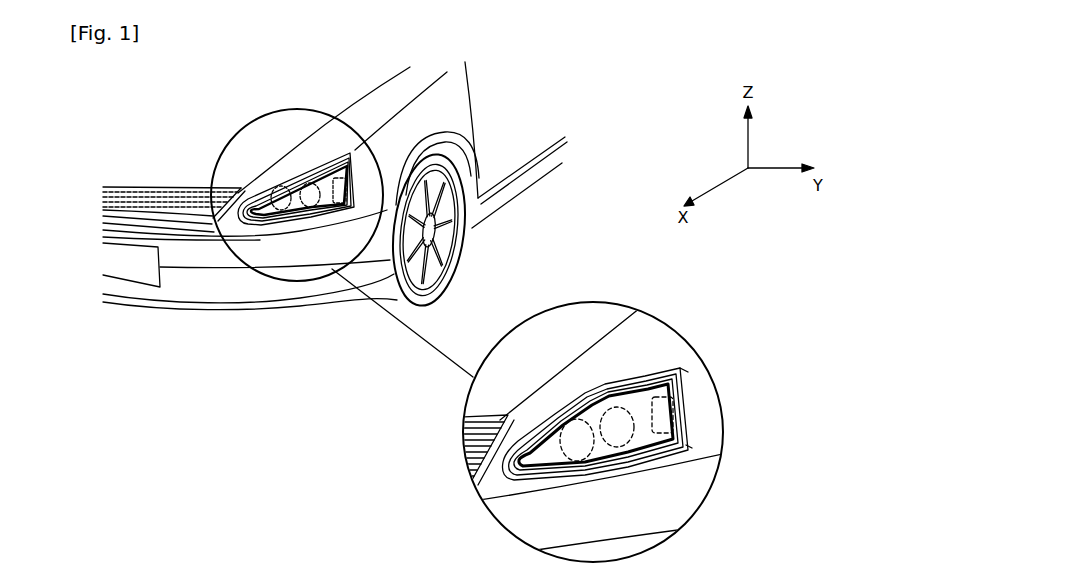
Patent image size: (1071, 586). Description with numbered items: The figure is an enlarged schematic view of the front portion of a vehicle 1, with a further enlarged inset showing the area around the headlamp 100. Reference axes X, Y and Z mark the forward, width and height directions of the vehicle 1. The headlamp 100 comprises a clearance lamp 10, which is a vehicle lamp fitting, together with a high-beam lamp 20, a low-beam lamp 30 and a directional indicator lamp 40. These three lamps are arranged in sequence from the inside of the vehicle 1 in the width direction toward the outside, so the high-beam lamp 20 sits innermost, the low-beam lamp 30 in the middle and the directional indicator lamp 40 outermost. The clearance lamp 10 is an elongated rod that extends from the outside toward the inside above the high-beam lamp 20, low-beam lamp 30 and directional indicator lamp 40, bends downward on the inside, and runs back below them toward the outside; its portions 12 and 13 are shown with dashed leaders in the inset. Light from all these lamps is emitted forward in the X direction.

The vehicle 1 is at (203, 352).
The headlamp 100 is at (607, 415).
The clearance lamp 10 is at (558, 405).
The upper edge portion of lamp 12 is at (692, 371).
The lower edge portion of lamp 13 is at (692, 442).
The high-beam lamp 20 is at (577, 461).
The low-beam lamp 30 is at (620, 447).
The directional indicator lamp 40 is at (662, 433).